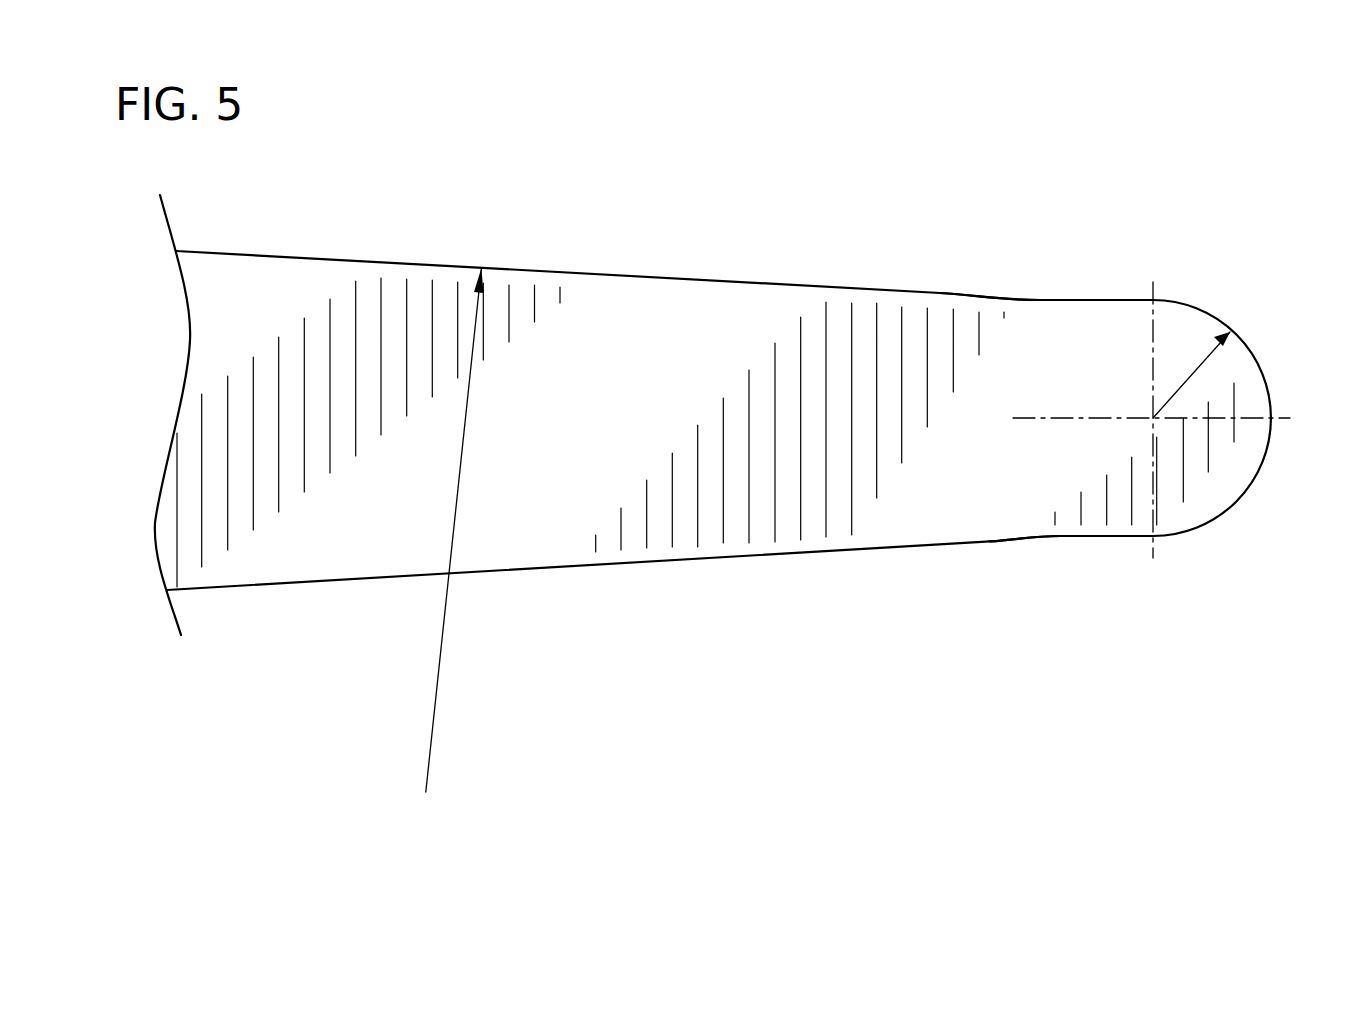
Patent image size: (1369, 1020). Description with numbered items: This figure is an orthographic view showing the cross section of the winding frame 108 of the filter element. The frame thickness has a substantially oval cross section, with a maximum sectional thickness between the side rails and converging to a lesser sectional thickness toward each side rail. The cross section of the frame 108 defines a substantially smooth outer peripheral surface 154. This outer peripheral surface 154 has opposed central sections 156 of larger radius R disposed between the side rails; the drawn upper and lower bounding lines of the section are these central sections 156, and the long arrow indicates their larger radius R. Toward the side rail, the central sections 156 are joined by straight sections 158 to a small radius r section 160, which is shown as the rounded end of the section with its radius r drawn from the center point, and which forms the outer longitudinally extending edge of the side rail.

The frame 108 is at (717, 213).
The outer peripheral surface 154 is at (347, 258).
The central sections 156 is at (513, 267).
The straight sections 158 is at (1098, 300).
The small radius sections 160 is at (1260, 364).
The small radius r is at (1182, 382).
The larger radius R is at (435, 715).